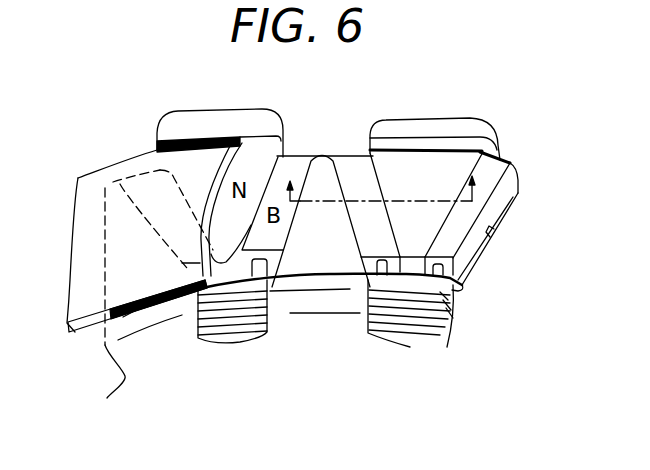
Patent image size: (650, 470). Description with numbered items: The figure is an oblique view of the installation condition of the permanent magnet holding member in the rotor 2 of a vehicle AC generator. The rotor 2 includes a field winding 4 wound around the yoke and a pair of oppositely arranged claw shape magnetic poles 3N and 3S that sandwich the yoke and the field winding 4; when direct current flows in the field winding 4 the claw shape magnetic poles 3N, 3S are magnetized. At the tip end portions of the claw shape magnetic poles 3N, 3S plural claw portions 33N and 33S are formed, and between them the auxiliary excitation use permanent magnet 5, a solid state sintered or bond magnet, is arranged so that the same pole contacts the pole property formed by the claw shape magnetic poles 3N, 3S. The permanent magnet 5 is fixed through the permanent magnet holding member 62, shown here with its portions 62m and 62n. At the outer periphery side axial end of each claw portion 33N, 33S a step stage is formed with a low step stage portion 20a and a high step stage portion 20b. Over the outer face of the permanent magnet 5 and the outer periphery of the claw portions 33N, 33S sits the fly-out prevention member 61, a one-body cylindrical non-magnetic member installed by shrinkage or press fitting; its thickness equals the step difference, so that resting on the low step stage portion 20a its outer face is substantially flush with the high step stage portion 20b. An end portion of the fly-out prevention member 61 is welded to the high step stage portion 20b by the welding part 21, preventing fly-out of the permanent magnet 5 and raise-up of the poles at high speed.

The rotor 2 is at (380, 396).
The claw shape magnetic pole 3N is at (383, 122).
The claw shape magnetic pole 3S is at (323, 298).
The field winding 4 is at (410, 313).
The auxiliary excitation use permanent magnet 5 is at (342, 156).
The low step stage portion 20a is at (460, 173).
The high step stage portion 20b is at (483, 137).
The welding part 21 is at (207, 137).
The claw portion 33N is at (443, 127).
The claw portion 33S is at (292, 258).
The fly-out prevention member 61 is at (83, 190).
The permanent magnet holding member 62 is at (463, 287).
The stator piece flange 62m is at (495, 238).
The stator piece portion 62n is at (445, 313).